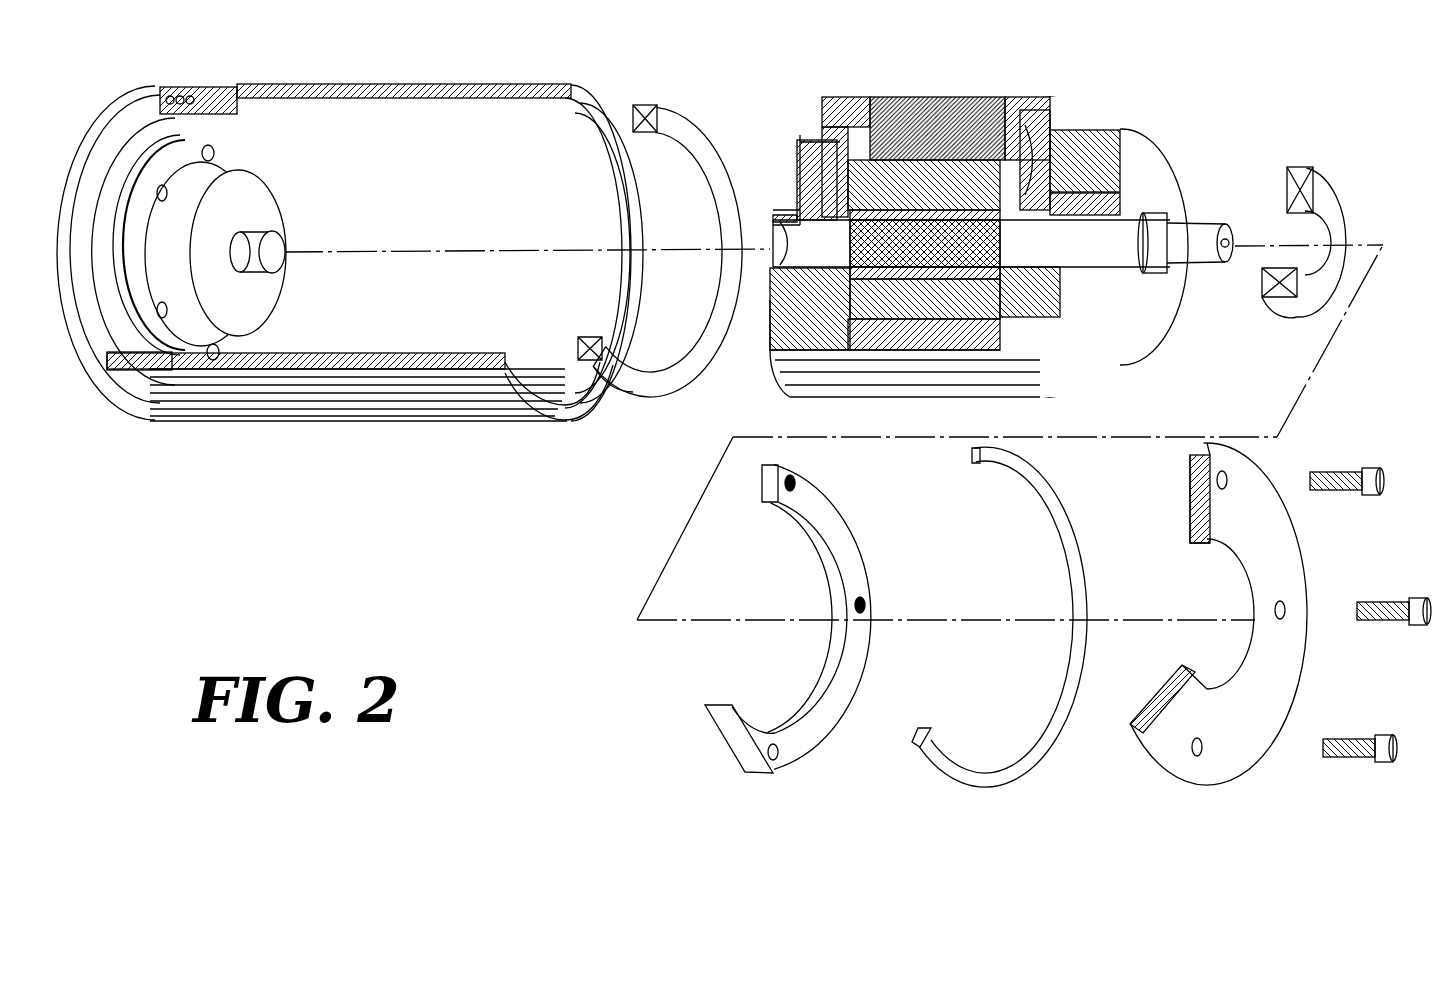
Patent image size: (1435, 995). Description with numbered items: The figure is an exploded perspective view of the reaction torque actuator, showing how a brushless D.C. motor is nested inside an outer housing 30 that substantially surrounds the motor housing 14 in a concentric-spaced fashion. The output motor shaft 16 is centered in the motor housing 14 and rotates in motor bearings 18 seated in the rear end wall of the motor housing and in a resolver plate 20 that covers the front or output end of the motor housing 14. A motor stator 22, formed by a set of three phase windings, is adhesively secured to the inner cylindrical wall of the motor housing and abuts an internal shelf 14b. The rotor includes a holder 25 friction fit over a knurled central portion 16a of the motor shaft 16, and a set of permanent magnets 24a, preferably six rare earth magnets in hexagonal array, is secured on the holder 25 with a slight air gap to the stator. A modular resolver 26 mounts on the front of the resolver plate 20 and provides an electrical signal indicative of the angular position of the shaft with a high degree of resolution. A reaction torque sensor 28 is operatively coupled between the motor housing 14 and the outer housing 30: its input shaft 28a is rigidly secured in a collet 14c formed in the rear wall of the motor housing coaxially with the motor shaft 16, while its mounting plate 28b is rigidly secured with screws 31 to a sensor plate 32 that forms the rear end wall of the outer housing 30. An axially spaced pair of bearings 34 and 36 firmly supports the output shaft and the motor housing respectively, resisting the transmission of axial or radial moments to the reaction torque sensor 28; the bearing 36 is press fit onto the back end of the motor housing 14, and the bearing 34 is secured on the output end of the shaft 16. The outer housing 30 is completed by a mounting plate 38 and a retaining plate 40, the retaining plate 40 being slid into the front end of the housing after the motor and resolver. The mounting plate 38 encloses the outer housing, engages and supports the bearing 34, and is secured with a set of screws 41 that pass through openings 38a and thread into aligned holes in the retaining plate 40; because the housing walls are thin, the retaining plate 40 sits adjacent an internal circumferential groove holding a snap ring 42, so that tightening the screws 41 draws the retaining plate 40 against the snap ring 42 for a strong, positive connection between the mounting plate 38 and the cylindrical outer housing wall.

The motor housing 14 is at (895, 97).
The internal shelf 14b is at (857, 97).
The collet 14c is at (785, 215).
The output motor shaft 16 is at (975, 224).
The knurled central portion 16a is at (763, 297).
The motor bearings 18 is at (1030, 110).
The resolver plate 20 is at (1082, 100).
The motor stator 22 is at (975, 97).
The permanent magnets 24a is at (800, 142).
The holder 25 is at (800, 183).
The modular resolver 26 is at (1160, 147).
The reaction torque sensor 28 is at (280, 203).
The input shaft 28a is at (273, 252).
The mounting plate 28b is at (237, 155).
The outer housing 30 is at (303, 85).
The screws 31 is at (220, 352).
The sensor plate 32 is at (128, 90).
The bearing 34 is at (1340, 178).
The bearing 36 is at (682, 107).
The mounting plate 38 is at (1249, 611).
The openings 38a is at (1227, 478).
The retaining plate 40 is at (835, 478).
The screws 41 is at (1380, 468).
The snap ring 42 is at (1045, 477).